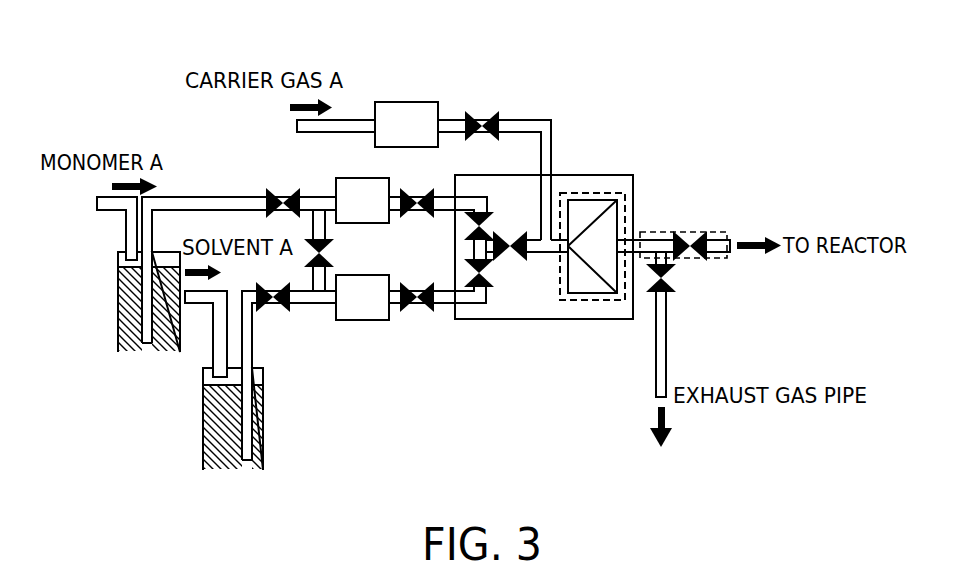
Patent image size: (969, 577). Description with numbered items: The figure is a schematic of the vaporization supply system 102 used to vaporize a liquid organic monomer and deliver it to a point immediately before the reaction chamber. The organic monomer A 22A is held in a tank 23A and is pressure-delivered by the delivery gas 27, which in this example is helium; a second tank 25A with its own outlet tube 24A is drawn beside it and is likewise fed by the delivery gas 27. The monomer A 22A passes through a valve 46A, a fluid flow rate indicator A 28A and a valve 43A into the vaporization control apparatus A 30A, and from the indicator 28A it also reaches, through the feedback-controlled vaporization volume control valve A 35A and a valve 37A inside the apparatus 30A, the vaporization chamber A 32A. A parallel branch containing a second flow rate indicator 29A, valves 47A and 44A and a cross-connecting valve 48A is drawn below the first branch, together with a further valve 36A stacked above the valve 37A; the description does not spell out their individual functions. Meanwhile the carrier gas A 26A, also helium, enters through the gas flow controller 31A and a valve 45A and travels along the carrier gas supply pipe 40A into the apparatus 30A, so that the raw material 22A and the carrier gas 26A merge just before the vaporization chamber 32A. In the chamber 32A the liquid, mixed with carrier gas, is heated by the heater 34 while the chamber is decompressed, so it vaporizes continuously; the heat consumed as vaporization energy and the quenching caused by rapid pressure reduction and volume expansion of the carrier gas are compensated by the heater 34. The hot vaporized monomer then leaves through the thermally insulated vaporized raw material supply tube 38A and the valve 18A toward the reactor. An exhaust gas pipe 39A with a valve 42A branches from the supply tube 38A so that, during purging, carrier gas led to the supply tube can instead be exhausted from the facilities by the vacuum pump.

The monomer supply apparatus 102 is at (642, 88).
The valve 18A is at (697, 233).
The organic monomer A 22A is at (118, 328).
The tank 23A is at (152, 353).
The solvent supply pipe 24A is at (246, 472).
The solvent container 25A is at (215, 440).
The carrier gas A 26A is at (311, 128).
The pressure delivery gas 27 is at (159, 229).
The fluid flow rate indicator A 28A is at (350, 178).
The liquid flow controller 29A is at (360, 320).
The vaporization control apparatus A 30A is at (572, 176).
The gas flow controller 31A is at (405, 102).
The vaporization chamber A 32A is at (612, 203).
The heater 34 is at (620, 193).
The feedback-controlled vaporization volume control valve A 35A is at (488, 196).
The valve 36A is at (488, 292).
The valve 37A is at (516, 258).
The vaporized raw material supply tube 38A is at (642, 233).
The exhaust gas pipe 39A is at (656, 326).
The carrier gas supply pipe 40A is at (551, 120).
The valve 42A is at (672, 292).
The valve 43A is at (418, 216).
The valve 44A is at (418, 300).
The valve 45A is at (486, 110).
The valve 46A is at (270, 192).
The valve 47A is at (280, 308).
The valve 48A is at (328, 262).